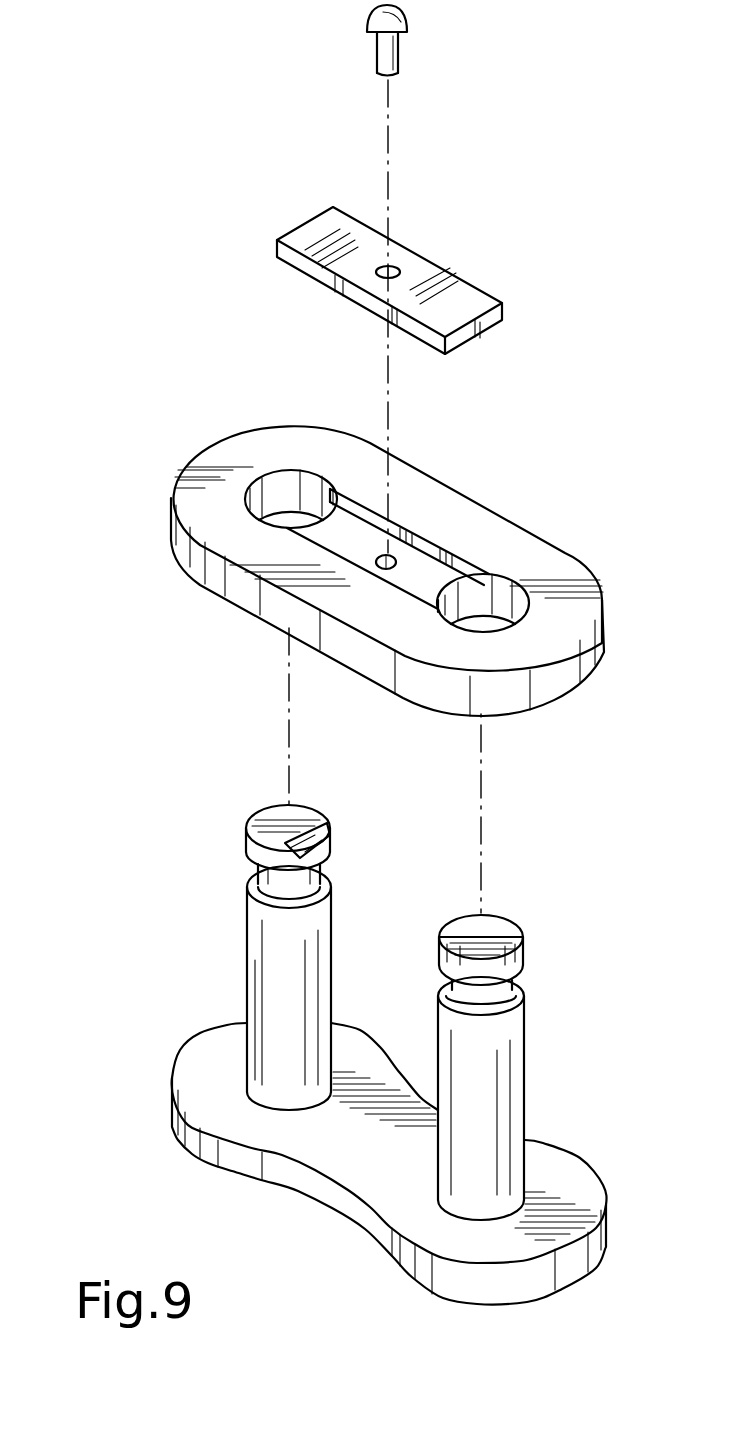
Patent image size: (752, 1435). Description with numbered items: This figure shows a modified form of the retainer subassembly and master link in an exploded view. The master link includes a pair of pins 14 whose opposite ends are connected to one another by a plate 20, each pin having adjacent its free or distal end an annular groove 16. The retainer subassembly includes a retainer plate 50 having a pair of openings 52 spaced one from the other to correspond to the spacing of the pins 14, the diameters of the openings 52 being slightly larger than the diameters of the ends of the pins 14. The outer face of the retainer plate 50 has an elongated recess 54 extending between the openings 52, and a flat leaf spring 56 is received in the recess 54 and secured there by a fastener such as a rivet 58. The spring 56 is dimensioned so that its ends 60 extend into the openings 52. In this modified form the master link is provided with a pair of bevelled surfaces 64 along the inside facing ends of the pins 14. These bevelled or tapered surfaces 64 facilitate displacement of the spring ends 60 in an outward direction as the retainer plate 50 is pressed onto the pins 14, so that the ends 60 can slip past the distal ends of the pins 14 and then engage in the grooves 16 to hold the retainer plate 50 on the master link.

The pins 14 is at (283, 951).
The annular groove 16 is at (287, 888).
The plate 20 is at (312, 1178).
The retainer plate 50 is at (324, 548).
The openings 52 is at (300, 482).
The elongated recess 54 is at (430, 583).
The flat leaf spring 56 is at (390, 282).
The rivet 58 is at (383, 48).
The spring ends 60 is at (490, 318).
The bevelled surfaces 64 is at (330, 849).